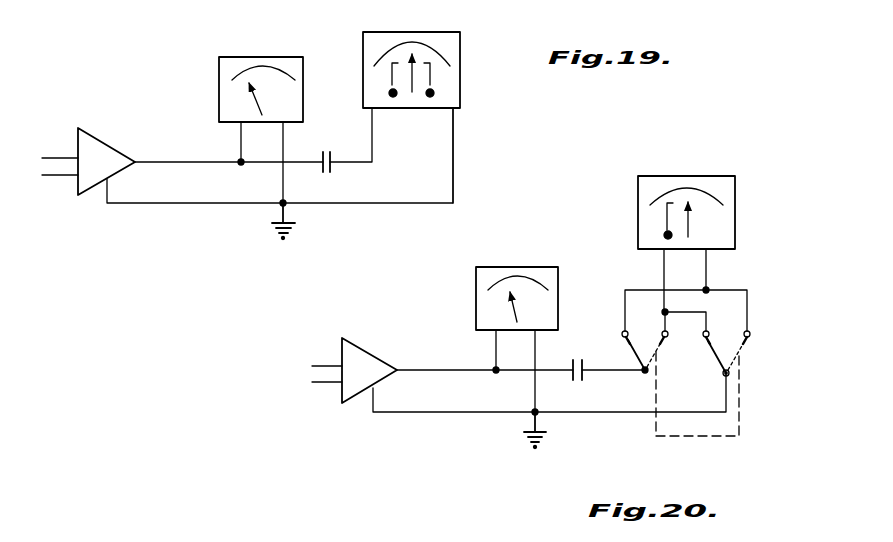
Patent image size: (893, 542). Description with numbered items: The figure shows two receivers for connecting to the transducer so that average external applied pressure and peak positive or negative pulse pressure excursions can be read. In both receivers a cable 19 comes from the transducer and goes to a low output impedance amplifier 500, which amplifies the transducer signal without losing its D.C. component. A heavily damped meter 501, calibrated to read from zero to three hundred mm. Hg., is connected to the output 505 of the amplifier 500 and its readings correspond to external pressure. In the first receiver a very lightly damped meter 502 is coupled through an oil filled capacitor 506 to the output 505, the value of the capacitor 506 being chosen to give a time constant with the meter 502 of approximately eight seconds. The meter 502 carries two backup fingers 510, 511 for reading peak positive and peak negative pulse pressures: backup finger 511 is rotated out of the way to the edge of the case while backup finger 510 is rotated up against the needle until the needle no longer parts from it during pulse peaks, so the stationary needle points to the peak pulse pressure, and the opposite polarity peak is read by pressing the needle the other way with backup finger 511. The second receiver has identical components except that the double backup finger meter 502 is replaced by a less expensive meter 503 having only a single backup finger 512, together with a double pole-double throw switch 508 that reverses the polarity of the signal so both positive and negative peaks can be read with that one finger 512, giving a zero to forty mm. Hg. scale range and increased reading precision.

In FIG. 19, the cable 19 is at (57, 158).
In FIG. 20, the cable 19 is at (322, 366).
In FIG. 19, the low output impedance amplifier 500 is at (95, 148).
In FIG. 20, the low output impedance amplifier 500 is at (357, 358).
In FIG. 19, the meter 501 is at (209, 102).
In FIG. 20, the meter 501 is at (469, 290).
In FIG. 19, the meter 502 is at (367, 26).
In FIG. 20, the meter 503 is at (746, 197).
In FIG. 19, the output 505 is at (136, 161).
In FIG. 20, the output 505 is at (397, 368).
In FIG. 19, the oil filled capacitor 506 is at (335, 155).
In FIG. 20, the oil filled capacitor 506 is at (585, 372).
In FIG. 20, the double pole-double throw switch 508 is at (749, 423).
In FIG. 19, the backup finger 510 is at (432, 80).
In FIG. 19, the backup finger 511 is at (390, 78).
In FIG. 20, the meter contact 512 is at (665, 219).